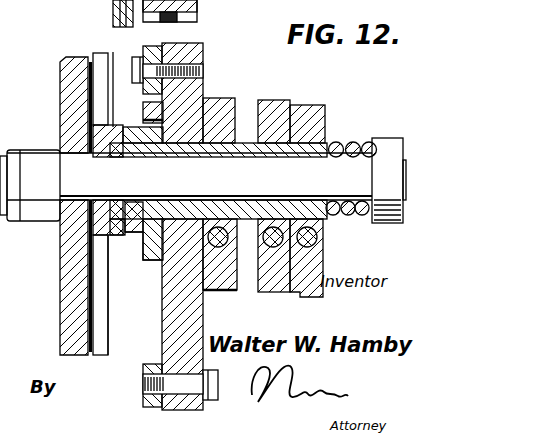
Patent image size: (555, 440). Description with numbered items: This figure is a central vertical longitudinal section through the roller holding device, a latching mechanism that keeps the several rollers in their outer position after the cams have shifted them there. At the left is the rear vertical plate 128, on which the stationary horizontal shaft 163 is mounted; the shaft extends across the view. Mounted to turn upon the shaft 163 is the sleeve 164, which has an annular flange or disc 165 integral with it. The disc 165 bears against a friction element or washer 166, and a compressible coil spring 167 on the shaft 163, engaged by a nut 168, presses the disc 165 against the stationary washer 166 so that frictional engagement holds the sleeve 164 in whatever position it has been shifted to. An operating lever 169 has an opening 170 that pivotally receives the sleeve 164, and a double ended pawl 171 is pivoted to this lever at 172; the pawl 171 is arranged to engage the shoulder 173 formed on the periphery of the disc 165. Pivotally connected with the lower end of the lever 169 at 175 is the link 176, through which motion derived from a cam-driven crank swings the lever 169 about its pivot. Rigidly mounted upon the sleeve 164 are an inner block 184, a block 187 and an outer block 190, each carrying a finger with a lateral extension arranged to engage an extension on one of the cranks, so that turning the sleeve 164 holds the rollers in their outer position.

The rear vertical plate 128 is at (80, 274).
The friction element or washer 166 is at (128, 130).
The horizontal shaft 163 is at (108, 174).
The opening 170 is at (207, 102).
The shoulder 173 is at (150, 110).
The double ended pawl 171 is at (113, 52).
The operating lever 169 is at (196, 80).
The pivot of pawl 172 is at (190, 63).
The inner block 184 is at (218, 105).
The block 187 is at (273, 110).
The outer block 190 is at (310, 117).
The sleeve 164 is at (328, 140).
The compressible coil spring 167 is at (342, 212).
The nut 168 is at (386, 224).
The annular flange or disc 165 is at (135, 293).
The pivotal connection of link to lever 175 is at (143, 382).
The link 176 is at (147, 401).